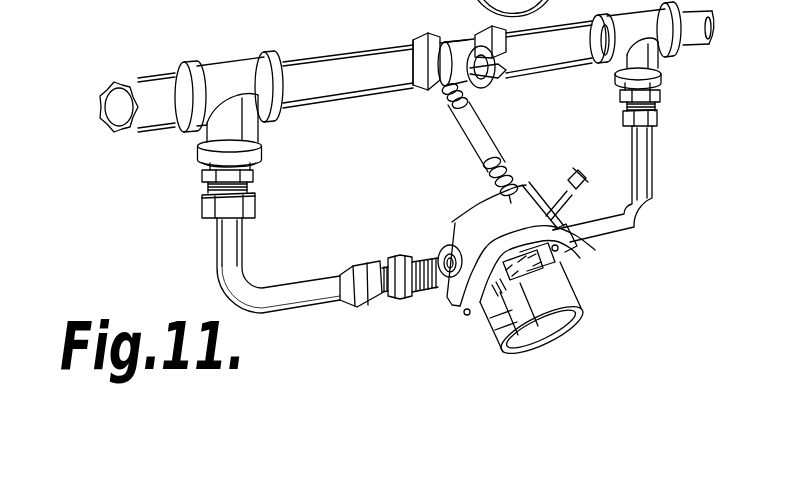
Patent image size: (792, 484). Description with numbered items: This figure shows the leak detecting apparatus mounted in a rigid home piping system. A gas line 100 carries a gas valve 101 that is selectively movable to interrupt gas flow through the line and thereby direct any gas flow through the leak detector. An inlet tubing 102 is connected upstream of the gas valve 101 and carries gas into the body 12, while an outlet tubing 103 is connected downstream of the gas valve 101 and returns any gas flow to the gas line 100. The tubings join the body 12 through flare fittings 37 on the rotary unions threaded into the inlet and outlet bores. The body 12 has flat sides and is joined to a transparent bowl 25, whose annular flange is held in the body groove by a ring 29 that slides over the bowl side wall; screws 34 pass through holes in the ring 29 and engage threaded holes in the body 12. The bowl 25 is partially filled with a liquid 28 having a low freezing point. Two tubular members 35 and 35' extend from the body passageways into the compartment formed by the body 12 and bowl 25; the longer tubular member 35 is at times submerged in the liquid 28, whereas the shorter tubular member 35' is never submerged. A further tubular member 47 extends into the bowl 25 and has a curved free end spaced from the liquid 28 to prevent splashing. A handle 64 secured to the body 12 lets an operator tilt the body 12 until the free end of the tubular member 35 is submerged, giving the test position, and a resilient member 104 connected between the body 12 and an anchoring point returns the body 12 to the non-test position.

The gas line 100 is at (290, 56).
The gas valve 101 is at (487, 88).
The inlet tubing 102 is at (242, 250).
The outlet tubing 103 is at (648, 212).
The resilient member 104 is at (514, 177).
The body 12 is at (464, 195).
The handle 64 is at (582, 193).
The screws 34 is at (562, 252).
The tubular member 35 is at (513, 315).
The tubular member 35' is at (567, 274).
The liquid 28 is at (557, 323).
The transparent bowl 25 is at (553, 351).
The tubular member 47 is at (495, 307).
The ring 29 is at (452, 310).
The flare fittings 37 is at (363, 303).